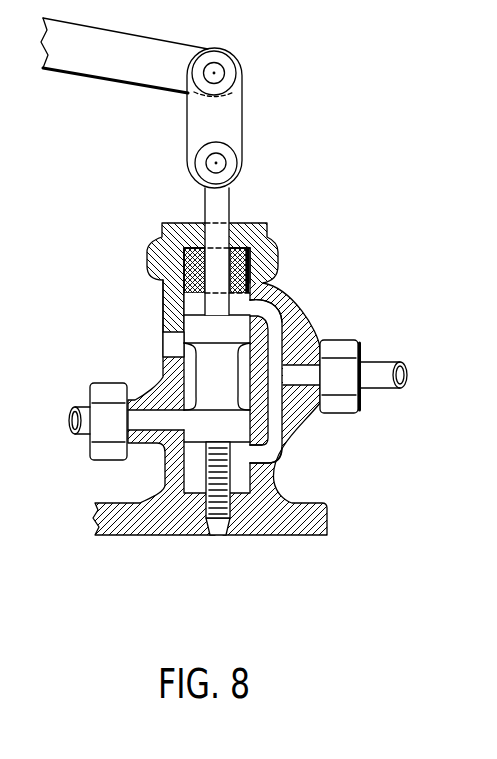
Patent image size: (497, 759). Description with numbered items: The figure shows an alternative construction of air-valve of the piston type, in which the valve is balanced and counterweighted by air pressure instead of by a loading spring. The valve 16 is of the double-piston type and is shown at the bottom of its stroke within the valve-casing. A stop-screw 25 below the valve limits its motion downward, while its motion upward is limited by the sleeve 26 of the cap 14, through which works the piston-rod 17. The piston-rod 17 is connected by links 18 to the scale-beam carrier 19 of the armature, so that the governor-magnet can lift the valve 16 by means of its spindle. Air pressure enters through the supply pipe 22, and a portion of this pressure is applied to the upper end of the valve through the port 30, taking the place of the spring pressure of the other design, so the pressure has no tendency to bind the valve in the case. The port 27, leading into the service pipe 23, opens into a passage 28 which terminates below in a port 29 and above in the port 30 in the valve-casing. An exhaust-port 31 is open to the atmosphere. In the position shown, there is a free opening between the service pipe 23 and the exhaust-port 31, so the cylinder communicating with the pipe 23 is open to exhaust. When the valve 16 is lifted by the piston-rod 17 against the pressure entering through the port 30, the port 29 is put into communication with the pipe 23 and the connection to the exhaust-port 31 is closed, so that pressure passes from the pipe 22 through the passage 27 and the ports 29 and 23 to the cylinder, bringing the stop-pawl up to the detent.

The cap 14 is at (262, 231).
The valve 16 is at (217, 416).
The piston-rod 17 is at (223, 207).
The links 18 is at (235, 115).
The scale-beam carrier 19 is at (124, 55).
The air supply pipe 22 is at (363, 376).
The air service pipe 23 is at (73, 410).
The stop-screw 25 is at (215, 527).
The sleeve 26 is at (273, 262).
The port 27 is at (306, 380).
The passage 28 is at (276, 421).
The port 29 is at (252, 456).
The port 30 is at (263, 305).
The exhaust-port 31 is at (166, 343).